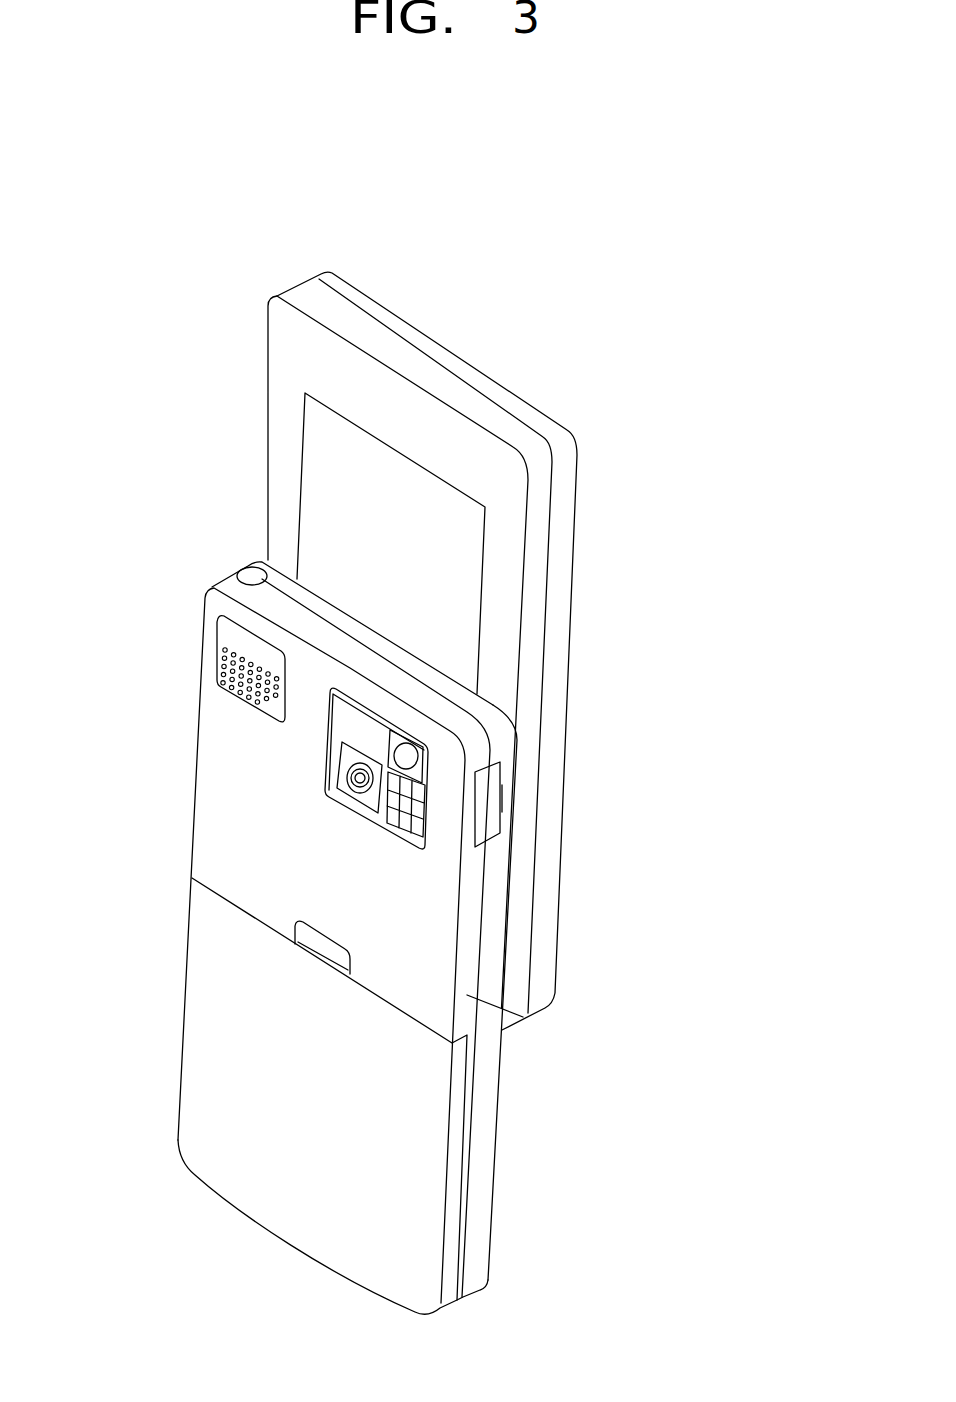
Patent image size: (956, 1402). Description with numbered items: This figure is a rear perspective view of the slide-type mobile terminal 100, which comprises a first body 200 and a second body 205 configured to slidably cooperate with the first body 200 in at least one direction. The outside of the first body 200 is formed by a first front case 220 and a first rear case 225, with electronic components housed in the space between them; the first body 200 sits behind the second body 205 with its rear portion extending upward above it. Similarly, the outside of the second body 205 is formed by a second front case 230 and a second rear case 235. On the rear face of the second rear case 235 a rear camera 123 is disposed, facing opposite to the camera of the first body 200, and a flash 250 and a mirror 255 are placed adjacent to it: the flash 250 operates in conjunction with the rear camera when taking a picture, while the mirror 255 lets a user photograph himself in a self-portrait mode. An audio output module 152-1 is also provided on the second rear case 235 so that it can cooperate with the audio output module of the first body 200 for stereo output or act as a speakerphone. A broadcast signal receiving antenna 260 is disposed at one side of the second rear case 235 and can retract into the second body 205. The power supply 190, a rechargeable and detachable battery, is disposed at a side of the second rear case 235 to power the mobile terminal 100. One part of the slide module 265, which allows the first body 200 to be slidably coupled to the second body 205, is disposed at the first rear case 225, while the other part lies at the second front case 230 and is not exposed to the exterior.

The mobile terminal 100 is at (600, 350).
The first body 200 is at (235, 382).
The second body 205 is at (171, 778).
The first front case 220 is at (318, 282).
The first rear case 225 is at (297, 298).
The slide module 265 is at (306, 490).
The broadcast signal receiving antenna 260 is at (245, 577).
The speaker 152-1 is at (233, 667).
The flash 250 is at (415, 833).
The camera 123 is at (363, 777).
The mirror 255 is at (407, 753).
The second rear case 235 is at (527, 1017).
The second front case 230 is at (495, 1060).
The power supply 190 is at (203, 977).